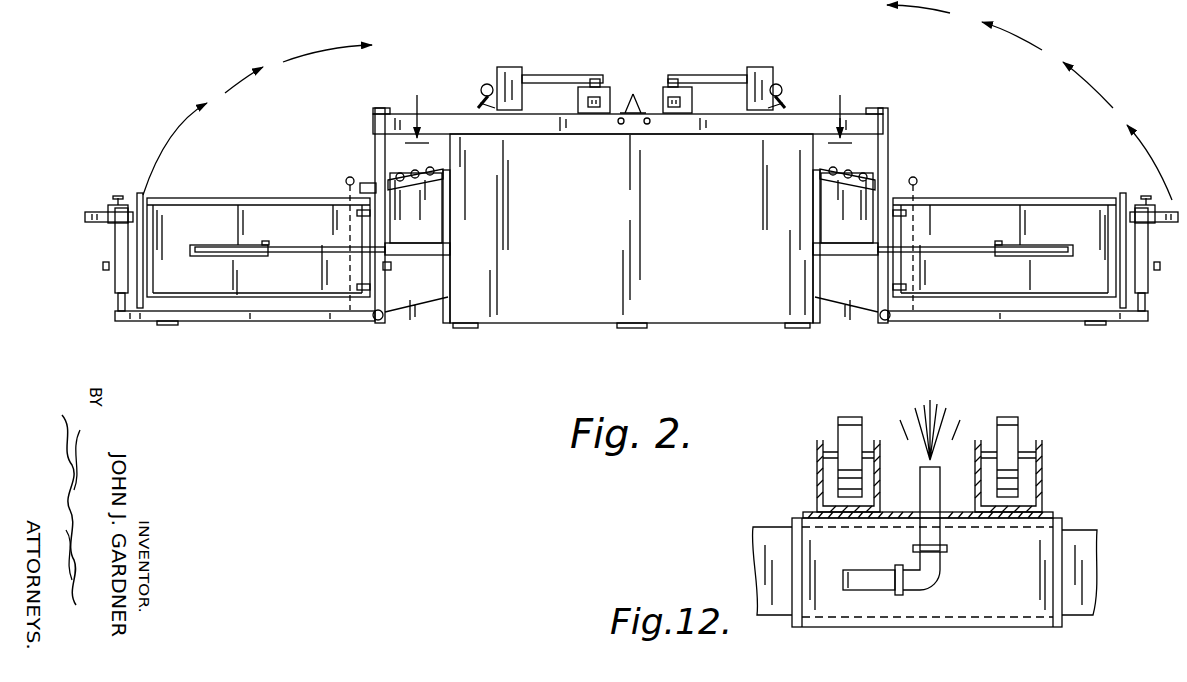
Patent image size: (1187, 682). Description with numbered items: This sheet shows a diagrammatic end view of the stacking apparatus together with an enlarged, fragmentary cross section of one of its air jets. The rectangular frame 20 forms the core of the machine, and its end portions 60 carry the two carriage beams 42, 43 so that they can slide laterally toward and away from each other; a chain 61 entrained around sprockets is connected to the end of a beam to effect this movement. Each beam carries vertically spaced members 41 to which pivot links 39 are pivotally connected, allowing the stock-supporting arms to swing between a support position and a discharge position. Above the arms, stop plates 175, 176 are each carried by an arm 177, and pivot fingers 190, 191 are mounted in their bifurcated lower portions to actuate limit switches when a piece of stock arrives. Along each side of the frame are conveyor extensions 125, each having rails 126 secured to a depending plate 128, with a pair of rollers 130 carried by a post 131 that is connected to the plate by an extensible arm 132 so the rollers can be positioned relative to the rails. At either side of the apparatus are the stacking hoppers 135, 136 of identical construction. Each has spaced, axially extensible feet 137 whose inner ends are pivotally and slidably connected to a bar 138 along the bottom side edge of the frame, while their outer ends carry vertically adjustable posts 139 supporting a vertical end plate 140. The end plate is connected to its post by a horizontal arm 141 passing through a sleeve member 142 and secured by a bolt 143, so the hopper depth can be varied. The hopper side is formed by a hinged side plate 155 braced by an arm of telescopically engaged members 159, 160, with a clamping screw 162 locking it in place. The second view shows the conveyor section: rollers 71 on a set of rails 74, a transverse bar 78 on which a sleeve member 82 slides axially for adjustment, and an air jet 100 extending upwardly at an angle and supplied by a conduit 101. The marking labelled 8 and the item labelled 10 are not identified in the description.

In FIG. 2, the section line for FIG. 8 is at (628, 110).
In FIG. 2, the knob 10 is at (913, 178).
In FIG. 2, the rectangular frame 20 is at (850, 108).
In FIG. 2, the pivot link 39 is at (480, 104).
In FIG. 2, the vertically spaced member 41 is at (482, 93).
In FIG. 2, the carriage beam 42 is at (515, 59).
In FIG. 2, the carriage beam 43 is at (775, 59).
In FIG. 2, the end portion of the frame 60 is at (683, 134).
In FIG. 2, the chain 61 is at (633, 108).
In FIG. 12, the roller 71 is at (848, 417).
In FIG. 12, the set of rails 74 is at (817, 463).
In FIG. 12, the bar 78 is at (1093, 557).
In FIG. 12, the sleeve member 82 is at (972, 599).
In FIG. 12, the air jet 100 is at (920, 481).
In FIG. 12, the conduit 101 is at (866, 564).
In FIG. 2, the conveyor extension 125 is at (392, 161).
In FIG. 2, the rail 126 is at (440, 167).
In FIG. 2, the depending plate 128 is at (413, 233).
In FIG. 2, the roller 130 is at (352, 178).
In FIG. 2, the post 131 is at (347, 186).
In FIG. 2, the extensible arm 132 is at (380, 271).
In FIG. 2, the stacking hopper 135 is at (253, 185).
In FIG. 2, the stacking hopper 136 is at (993, 189).
In FIG. 2, the axially extensible foot 137 is at (262, 322).
In FIG. 2, the bar 138 is at (379, 322).
In FIG. 2, the vertically adjustable post 139 is at (115, 251).
In FIG. 2, the vertical end plate 140 is at (143, 198).
In FIG. 2, the horizontal arm 141 is at (85, 218).
In FIG. 2, the sleeve member 142 is at (110, 211).
In FIG. 2, the bolt 143 is at (120, 205).
In FIG. 2, the hinged side plate 155 is at (225, 185).
In FIG. 2, the telescoping arm member 159 is at (204, 247).
In FIG. 2, the telescoping arm member 160 is at (320, 247).
In FIG. 2, the clamping screw 162 is at (262, 245).
In FIG. 2, the stop plate 175 is at (606, 87).
In FIG. 2, the stop plate 176 is at (666, 87).
In FIG. 2, the arm 177 is at (568, 59).
In FIG. 2, the pivot finger 190 is at (596, 108).
In FIG. 2, the pivot finger 191 is at (680, 102).